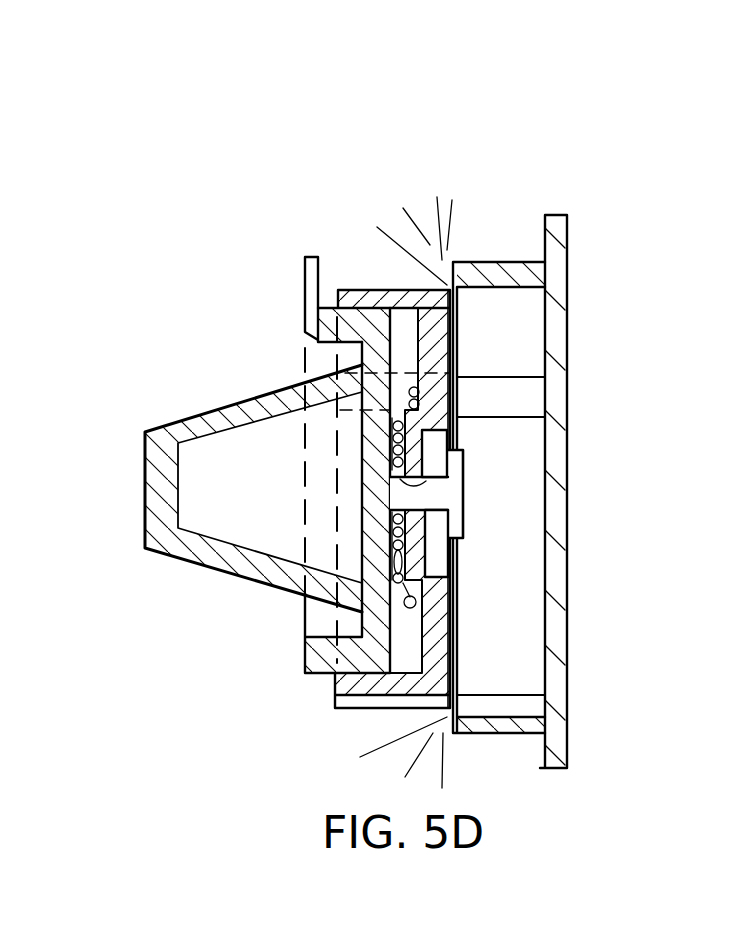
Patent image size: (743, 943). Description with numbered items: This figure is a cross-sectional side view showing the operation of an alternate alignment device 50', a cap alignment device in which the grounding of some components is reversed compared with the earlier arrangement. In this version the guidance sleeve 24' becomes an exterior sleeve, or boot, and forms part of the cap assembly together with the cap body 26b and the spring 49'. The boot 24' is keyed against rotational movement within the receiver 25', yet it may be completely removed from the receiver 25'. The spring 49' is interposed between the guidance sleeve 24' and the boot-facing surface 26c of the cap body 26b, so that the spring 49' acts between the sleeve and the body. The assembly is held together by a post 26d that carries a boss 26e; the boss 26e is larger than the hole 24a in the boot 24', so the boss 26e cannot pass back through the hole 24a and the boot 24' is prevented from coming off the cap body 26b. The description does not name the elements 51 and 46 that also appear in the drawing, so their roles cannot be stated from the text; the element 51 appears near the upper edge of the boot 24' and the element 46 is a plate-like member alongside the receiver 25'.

The alternate alignment device 50' is at (508, 420).
The guidance sleeve 24' is at (384, 411).
The receiver 25' is at (508, 446).
The retaining plate 51 is at (305, 257).
The cap body 26b is at (232, 406).
The boot-facing surface 26c is at (405, 398).
The hole 24a is at (432, 496).
The post 26d is at (443, 498).
The boss 26e is at (463, 513).
The spring 49' is at (543, 560).
The wall plate 46 is at (563, 627).